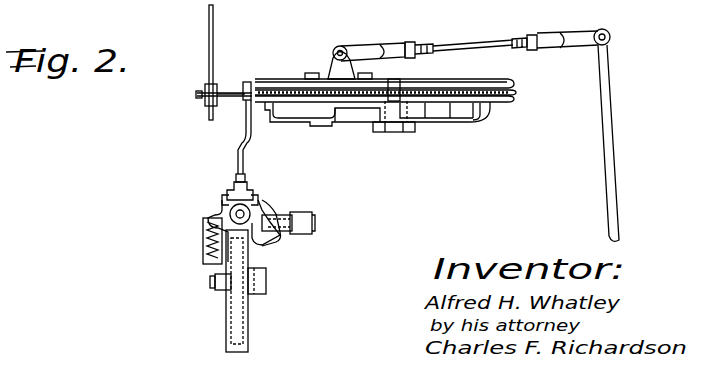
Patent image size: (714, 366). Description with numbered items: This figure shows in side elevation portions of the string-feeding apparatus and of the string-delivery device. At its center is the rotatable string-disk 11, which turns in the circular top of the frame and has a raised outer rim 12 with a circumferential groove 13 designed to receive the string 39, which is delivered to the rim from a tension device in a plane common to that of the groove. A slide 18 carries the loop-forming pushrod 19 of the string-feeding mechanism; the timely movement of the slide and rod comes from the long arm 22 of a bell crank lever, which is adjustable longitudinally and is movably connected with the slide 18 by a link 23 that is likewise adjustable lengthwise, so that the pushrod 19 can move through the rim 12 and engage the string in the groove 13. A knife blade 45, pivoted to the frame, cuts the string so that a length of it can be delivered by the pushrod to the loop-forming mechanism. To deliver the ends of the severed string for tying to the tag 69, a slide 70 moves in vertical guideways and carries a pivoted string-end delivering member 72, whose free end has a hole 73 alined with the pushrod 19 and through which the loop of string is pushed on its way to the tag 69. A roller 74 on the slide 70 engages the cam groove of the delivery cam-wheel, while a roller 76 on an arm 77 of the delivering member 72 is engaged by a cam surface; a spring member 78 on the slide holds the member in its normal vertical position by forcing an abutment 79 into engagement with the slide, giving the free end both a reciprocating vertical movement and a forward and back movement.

The rotatable string-disk 11 is at (488, 122).
The raised outer rim 12 is at (503, 79).
The circumferential groove 13 is at (524, 97).
The slide 18 is at (337, 71).
The loop-forming pushrod 19 is at (226, 98).
The long arm 22 is at (614, 186).
The link 23 is at (481, 43).
The string 39 is at (203, 89).
The knife blade 45 is at (394, 104).
The tag 69 is at (208, 20).
The slide 70 is at (249, 324).
The string-end delivering member 72 is at (248, 147).
The hole 73 is at (246, 81).
The roller 74 is at (268, 284).
The roller 76 is at (308, 212).
The arm 77 is at (276, 216).
The spring member 78 is at (205, 222).
The abutment 79 is at (258, 247).